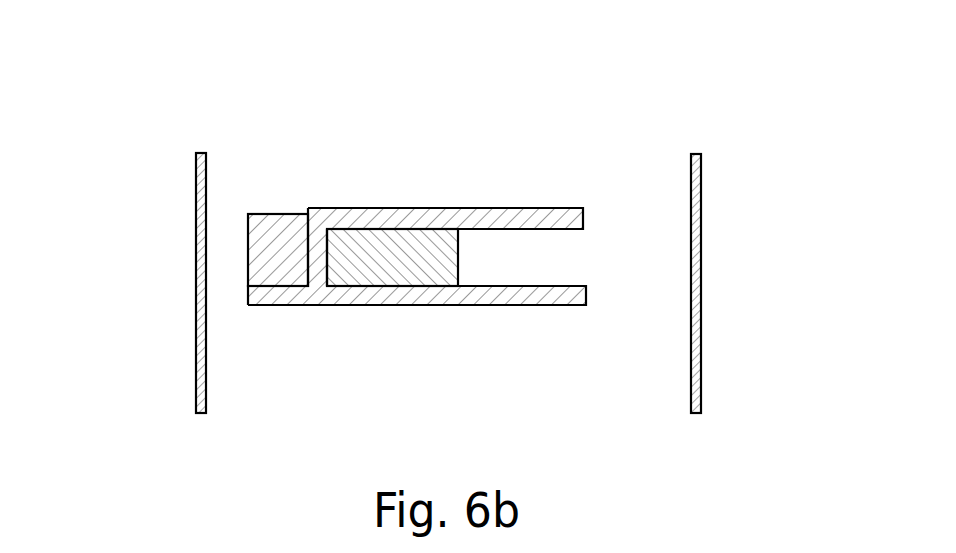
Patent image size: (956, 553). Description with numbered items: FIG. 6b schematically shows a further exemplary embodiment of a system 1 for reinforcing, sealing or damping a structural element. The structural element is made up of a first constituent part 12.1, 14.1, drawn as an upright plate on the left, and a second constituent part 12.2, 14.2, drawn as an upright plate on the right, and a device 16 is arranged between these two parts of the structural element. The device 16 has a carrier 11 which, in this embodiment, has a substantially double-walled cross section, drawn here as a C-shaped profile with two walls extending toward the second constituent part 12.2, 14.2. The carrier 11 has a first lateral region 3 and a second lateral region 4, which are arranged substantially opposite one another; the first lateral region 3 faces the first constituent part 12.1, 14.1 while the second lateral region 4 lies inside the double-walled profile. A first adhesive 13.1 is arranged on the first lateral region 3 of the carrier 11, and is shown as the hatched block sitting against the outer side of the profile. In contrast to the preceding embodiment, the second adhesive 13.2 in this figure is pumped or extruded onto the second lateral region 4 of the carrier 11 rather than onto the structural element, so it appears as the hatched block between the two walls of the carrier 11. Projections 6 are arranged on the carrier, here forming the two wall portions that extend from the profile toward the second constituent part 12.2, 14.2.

The system 1 is at (141, 103).
The first lateral region 3 is at (307, 237).
The second lateral region 4 is at (330, 254).
The projection 6 is at (552, 213).
The carrier 11 is at (403, 297).
The device 16 is at (424, 168).
The first adhesive 13.1 is at (272, 257).
The second adhesive 13.2 is at (427, 257).
The first constituent part 12.1 is at (196, 368).
The first constituent part 14.1 is at (149, 283).
The second constituent part 12.2 is at (697, 394).
The second constituent part 14.2 is at (784, 291).